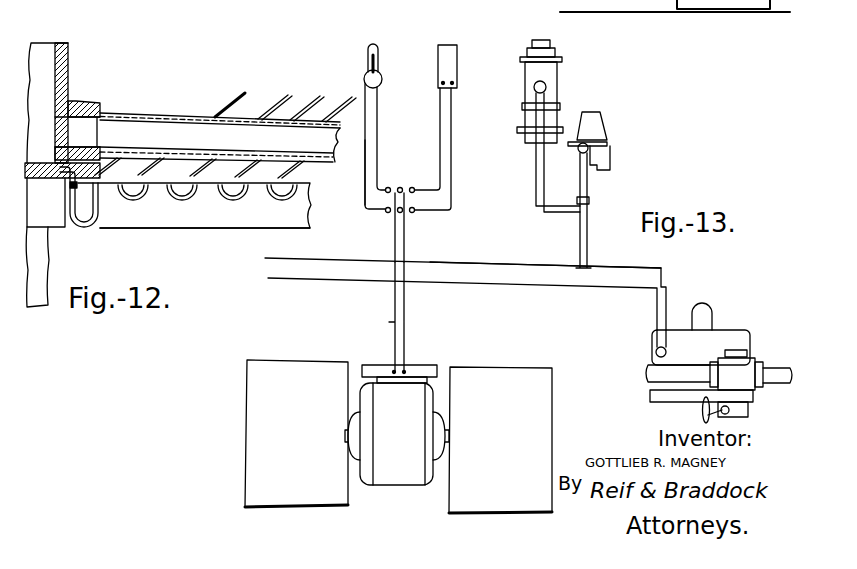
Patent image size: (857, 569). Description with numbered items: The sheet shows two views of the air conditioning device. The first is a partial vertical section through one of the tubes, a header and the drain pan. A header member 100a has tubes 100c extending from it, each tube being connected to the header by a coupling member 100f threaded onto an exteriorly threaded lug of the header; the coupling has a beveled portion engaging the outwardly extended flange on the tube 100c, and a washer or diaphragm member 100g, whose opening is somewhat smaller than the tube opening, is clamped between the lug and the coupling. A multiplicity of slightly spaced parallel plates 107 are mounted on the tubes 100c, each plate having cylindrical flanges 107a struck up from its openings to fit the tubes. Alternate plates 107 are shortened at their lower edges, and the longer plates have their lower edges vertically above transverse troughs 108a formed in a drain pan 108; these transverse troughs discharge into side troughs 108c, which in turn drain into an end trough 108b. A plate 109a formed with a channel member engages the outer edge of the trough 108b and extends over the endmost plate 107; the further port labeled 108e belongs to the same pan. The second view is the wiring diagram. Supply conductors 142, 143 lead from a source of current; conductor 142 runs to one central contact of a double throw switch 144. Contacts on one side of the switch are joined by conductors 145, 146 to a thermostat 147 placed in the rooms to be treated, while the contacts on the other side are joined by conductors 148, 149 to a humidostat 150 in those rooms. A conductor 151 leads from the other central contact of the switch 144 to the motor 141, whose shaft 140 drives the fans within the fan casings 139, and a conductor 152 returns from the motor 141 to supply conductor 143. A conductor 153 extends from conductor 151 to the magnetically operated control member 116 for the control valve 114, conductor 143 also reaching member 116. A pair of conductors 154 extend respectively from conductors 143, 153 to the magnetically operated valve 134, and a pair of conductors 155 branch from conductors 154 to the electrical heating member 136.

In FIG. 12, the header member 100a is at (44, 49).
In FIG. 12, the coupling member 100f is at (100, 108).
In FIG. 12, the tube 100c is at (133, 115).
In FIG. 12, the washer or diaphragm member 100g is at (100, 142).
In FIG. 12, the cylindrical flange 107a is at (221, 111).
In FIG. 12, the plate 107 is at (302, 110).
In FIG. 12, the drain pan 108 is at (322, 218).
In FIG. 12, the transverse trough 108a is at (230, 203).
In FIG. 12, the trough 108b is at (99, 209).
In FIG. 12, the burner port 108e is at (163, 192).
In FIG. 12, the side trough 108c is at (162, 228).
In FIG. 12, the plate 109a is at (71, 226).
In FIG. 13, the thermostat 147 is at (379, 70).
In FIG. 13, the conductor 145 is at (380, 115).
In FIG. 13, the conductor 146 is at (366, 153).
In FIG. 13, the double throw switch 144 is at (409, 180).
In FIG. 13, the humidostat 150 is at (458, 63).
In FIG. 13, the conductor 148 is at (442, 102).
In FIG. 13, the conductor 149 is at (453, 130).
In FIG. 13, the conductor 151 is at (405, 232).
In FIG. 13, the conductor 152 is at (402, 322).
In FIG. 13, the conductor 142 is at (266, 258).
In FIG. 13, the conductor 143 is at (273, 276).
In FIG. 13, the conductor 153 is at (478, 263).
In FIG. 13, the electrical heating member 136 is at (556, 73).
In FIG. 13, the conductor 155 is at (537, 186).
In FIG. 13, the magnetically operated valve 134 is at (598, 147).
In FIG. 13, the conductor 154 is at (588, 227).
In FIG. 13, the fan casing 139 is at (263, 360).
In FIG. 13, the shaft 140 is at (349, 448).
In FIG. 13, the motor 141 is at (406, 478).
In FIG. 13, the magnetically operated control member 116 is at (733, 332).
In FIG. 13, the control valve 114 is at (720, 390).